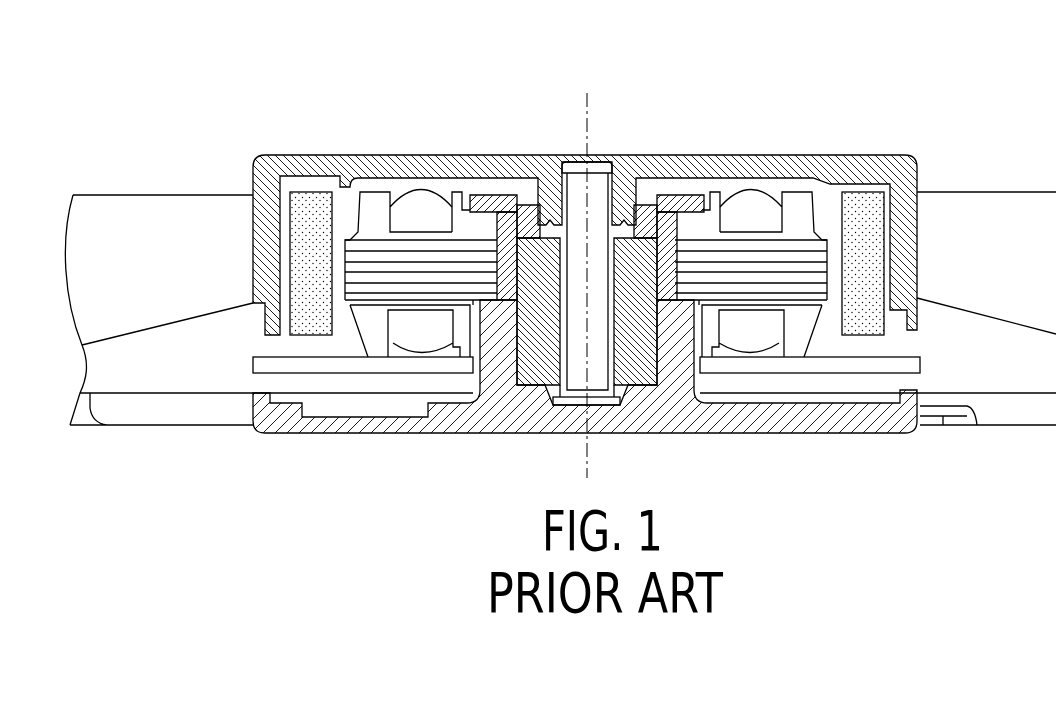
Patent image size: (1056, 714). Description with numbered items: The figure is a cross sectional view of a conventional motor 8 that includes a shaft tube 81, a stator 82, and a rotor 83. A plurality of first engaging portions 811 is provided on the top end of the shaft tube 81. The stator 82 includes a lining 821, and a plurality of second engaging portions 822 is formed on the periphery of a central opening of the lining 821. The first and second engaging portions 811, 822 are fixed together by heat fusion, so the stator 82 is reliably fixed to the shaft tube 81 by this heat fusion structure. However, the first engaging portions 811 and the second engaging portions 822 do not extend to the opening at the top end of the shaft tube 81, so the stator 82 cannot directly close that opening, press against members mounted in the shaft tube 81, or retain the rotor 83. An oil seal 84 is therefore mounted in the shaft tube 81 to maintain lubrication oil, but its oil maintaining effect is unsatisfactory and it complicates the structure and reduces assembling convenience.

The motor 8 is at (792, 105).
The shaft tube 81 is at (500, 271).
The first engaging portions 811 is at (502, 195).
The stator 82 is at (373, 187).
The lining 821 is at (459, 195).
The second engaging portions 822 is at (480, 222).
The rotor 83 is at (625, 155).
The oil seal 84 is at (643, 200).